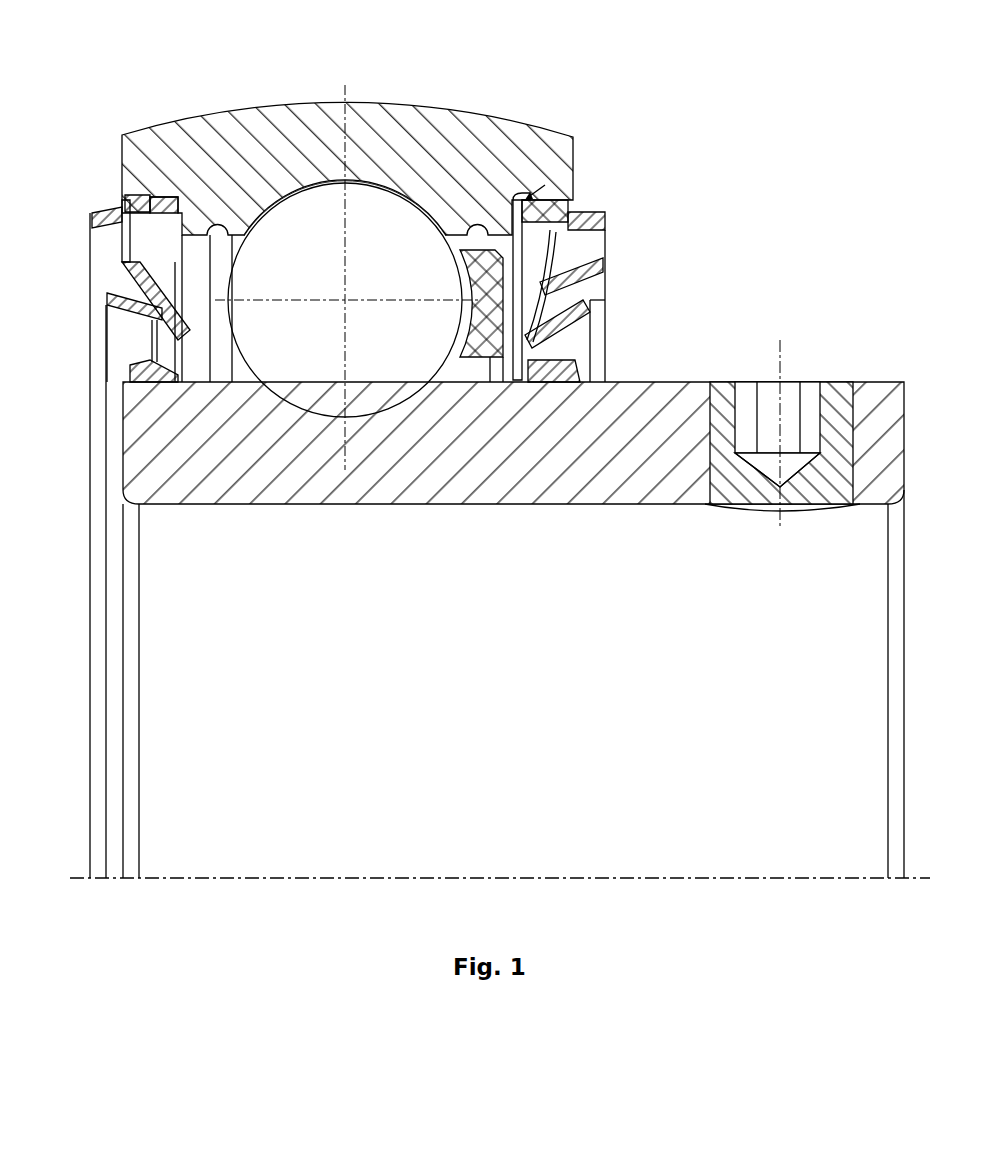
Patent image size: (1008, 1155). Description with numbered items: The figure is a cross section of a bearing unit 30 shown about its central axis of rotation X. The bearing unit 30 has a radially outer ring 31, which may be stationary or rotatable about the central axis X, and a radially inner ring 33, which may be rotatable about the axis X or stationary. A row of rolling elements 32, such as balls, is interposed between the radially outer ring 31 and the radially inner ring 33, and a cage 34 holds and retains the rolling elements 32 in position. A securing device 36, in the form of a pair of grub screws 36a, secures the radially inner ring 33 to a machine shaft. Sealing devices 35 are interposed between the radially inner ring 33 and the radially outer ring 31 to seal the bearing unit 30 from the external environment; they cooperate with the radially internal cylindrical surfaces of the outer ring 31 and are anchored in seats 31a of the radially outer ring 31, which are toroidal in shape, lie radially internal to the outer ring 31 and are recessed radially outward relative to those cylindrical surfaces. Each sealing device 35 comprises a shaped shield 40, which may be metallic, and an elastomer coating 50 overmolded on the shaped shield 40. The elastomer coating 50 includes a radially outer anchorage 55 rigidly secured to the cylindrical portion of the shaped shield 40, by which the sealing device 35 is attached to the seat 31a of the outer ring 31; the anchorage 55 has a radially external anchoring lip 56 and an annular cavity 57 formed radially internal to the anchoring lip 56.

The bearing unit 30 is at (163, 100).
The radially outer ring 31 is at (447, 150).
The seat 31a is at (478, 262).
The rolling elements 32 is at (312, 352).
The radially inner ring 33 is at (450, 462).
The cage 34 is at (490, 318).
The sealing device 35 is at (105, 237).
The securing device 36 is at (827, 352).
The grub screws 36a is at (740, 483).
The shaped shield 40 is at (160, 345).
The elastomer coating 50 is at (130, 262).
The radially outer anchorage 55 is at (125, 188).
The radially external anchoring lip 56 is at (170, 200).
The annular cavity 57 is at (160, 205).
The central axis of rotation X is at (652, 878).